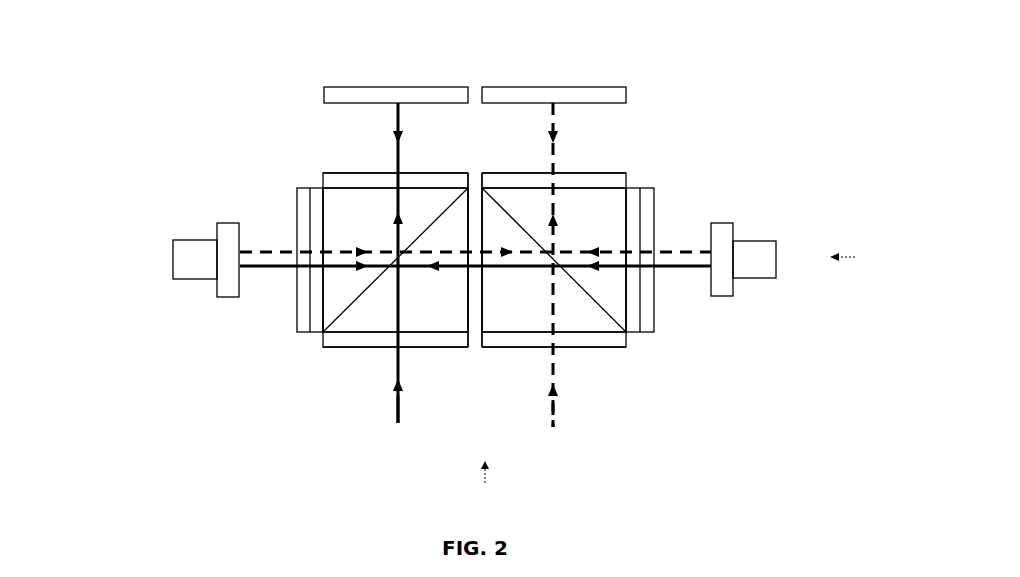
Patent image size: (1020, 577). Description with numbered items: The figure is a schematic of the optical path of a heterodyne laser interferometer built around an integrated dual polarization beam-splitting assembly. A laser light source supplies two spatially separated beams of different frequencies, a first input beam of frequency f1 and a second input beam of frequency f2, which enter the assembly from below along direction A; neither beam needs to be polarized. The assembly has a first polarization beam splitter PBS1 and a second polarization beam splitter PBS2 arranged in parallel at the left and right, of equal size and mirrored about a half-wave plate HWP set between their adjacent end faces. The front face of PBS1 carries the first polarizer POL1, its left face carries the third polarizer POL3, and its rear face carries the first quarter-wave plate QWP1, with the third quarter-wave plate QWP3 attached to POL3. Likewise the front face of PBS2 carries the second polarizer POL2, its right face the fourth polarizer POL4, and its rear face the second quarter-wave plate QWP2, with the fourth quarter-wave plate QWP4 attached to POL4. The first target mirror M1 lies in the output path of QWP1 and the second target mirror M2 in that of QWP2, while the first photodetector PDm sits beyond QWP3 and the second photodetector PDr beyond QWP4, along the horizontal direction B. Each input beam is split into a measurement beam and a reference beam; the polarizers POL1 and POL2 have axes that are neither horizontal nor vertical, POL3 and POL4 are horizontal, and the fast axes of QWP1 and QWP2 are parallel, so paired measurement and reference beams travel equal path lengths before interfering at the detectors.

The first target mirror M1 is at (363, 84).
The second target mirror M2 is at (612, 80).
The first quarter-wave plate QWP1 is at (337, 171).
The second quarter-wave plate QWP2 is at (612, 172).
The third quarter-wave plate QWP3 is at (292, 312).
The fourth quarter-wave plate QWP4 is at (656, 318).
The first polarization beam splitter PBS1 is at (437, 207).
The second polarization beam splitter PBS2 is at (507, 207).
The first polarizer POL1 is at (363, 350).
The second polarizer POL2 is at (515, 350).
The third polarizer POL3 is at (315, 338).
The fourth polarizer POL4 is at (632, 335).
The half-wave plate HWP is at (472, 320).
The first photodetector PDm is at (160, 238).
The second photodetector PDr is at (762, 240).
The frequency of first input beam f1 is at (388, 417).
The frequency of second input beam f2 is at (543, 420).
The direction A is at (485, 493).
The direction B is at (860, 260).